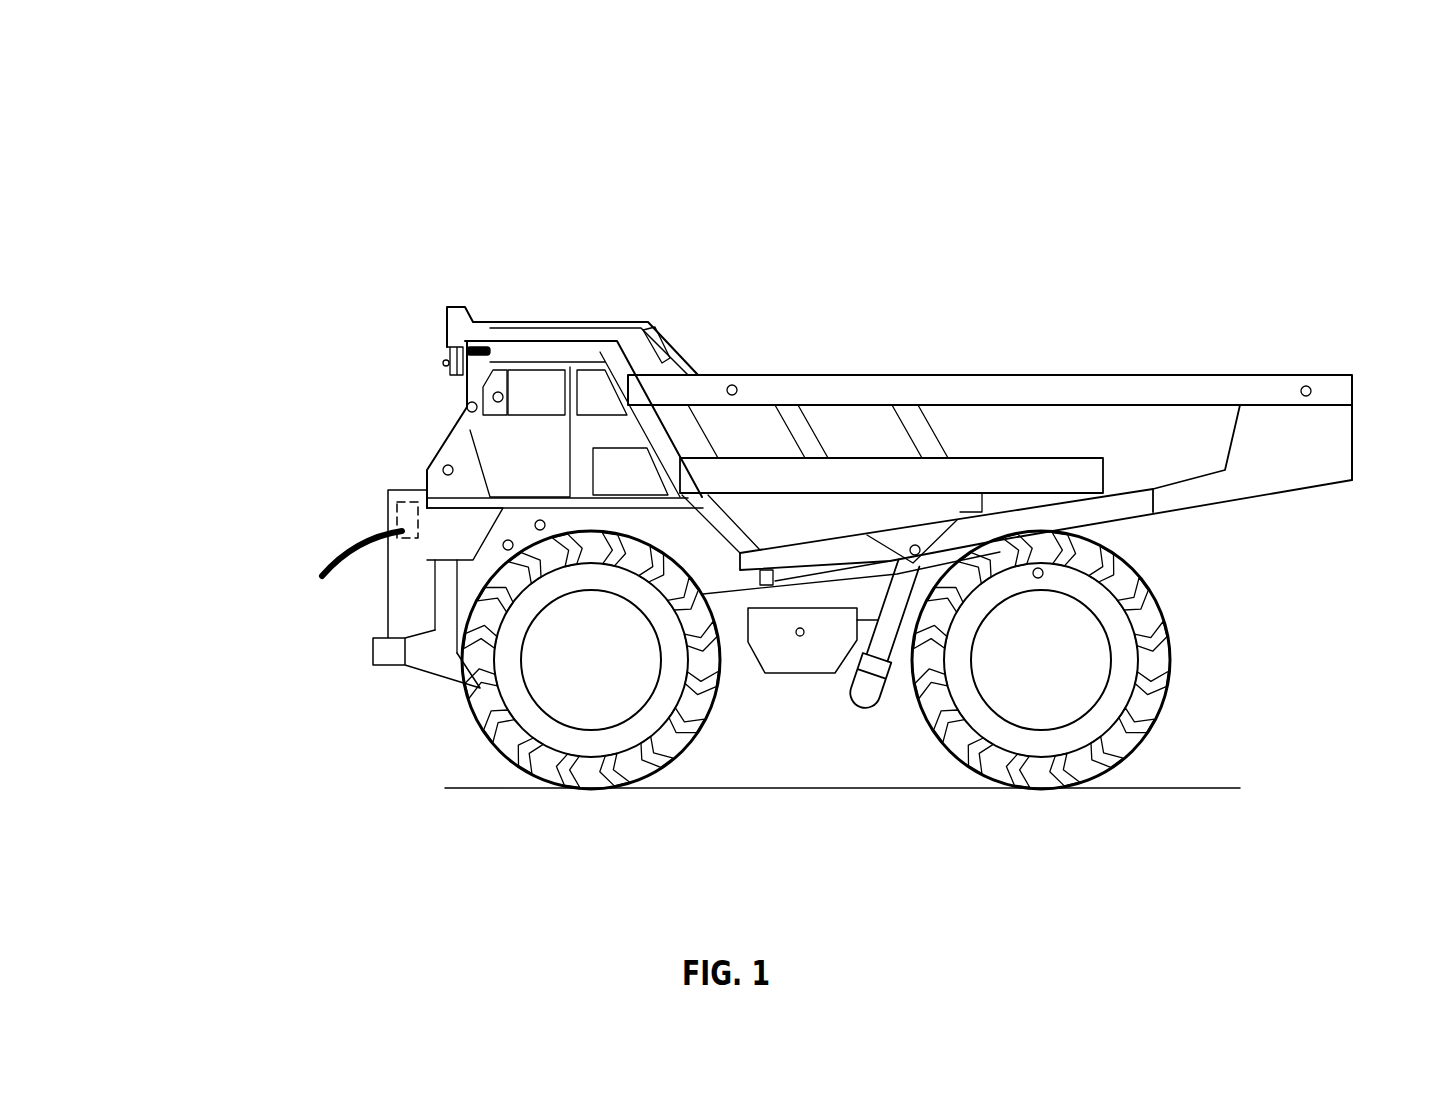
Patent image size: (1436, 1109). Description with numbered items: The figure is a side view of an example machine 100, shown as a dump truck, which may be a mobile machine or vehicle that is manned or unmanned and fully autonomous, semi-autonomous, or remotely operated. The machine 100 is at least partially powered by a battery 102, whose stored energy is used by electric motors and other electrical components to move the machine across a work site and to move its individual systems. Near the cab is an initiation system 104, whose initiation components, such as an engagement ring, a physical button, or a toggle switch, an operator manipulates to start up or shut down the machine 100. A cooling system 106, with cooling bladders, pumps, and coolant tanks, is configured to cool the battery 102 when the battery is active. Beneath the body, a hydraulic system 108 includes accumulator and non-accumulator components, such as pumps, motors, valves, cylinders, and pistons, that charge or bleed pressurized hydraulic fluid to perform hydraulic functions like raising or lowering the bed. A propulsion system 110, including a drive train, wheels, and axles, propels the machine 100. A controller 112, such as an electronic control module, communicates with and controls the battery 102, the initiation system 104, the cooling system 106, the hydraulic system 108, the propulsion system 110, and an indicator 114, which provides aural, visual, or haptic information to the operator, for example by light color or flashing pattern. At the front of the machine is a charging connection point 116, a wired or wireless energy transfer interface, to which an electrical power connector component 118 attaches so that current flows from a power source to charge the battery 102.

The machine 100 is at (245, 95).
The battery 102 is at (541, 520).
The initiation system 104 is at (467, 402).
The cooling system 106 is at (505, 549).
The hydraulic system 108 is at (800, 637).
The propulsion system 110 is at (1043, 571).
The controller 112 is at (443, 466).
The indicator 114 is at (489, 342).
The charging connection point 116 is at (396, 522).
The electrical power connector component 118 is at (312, 582).